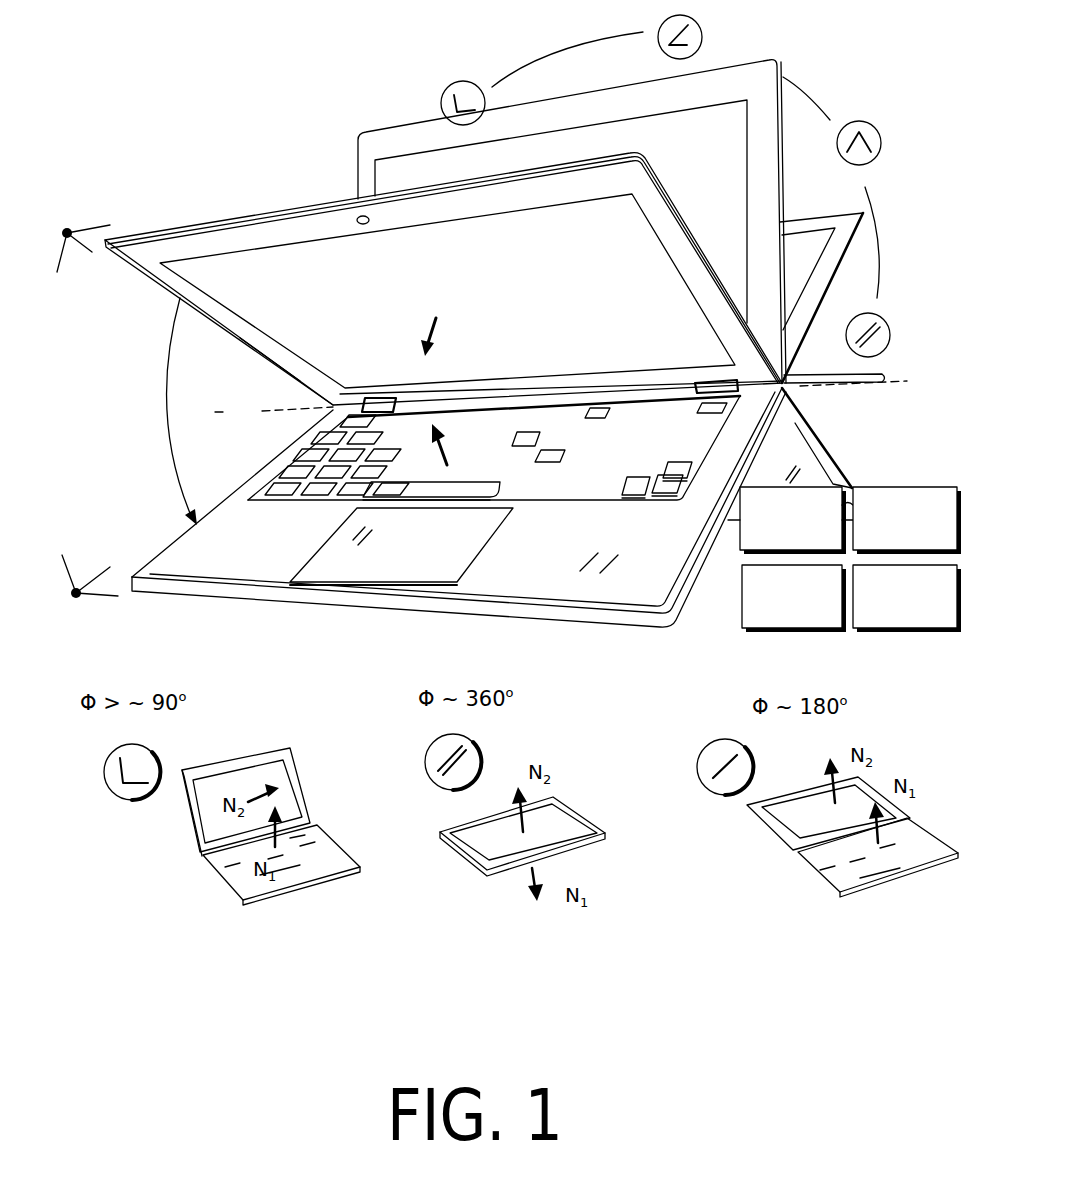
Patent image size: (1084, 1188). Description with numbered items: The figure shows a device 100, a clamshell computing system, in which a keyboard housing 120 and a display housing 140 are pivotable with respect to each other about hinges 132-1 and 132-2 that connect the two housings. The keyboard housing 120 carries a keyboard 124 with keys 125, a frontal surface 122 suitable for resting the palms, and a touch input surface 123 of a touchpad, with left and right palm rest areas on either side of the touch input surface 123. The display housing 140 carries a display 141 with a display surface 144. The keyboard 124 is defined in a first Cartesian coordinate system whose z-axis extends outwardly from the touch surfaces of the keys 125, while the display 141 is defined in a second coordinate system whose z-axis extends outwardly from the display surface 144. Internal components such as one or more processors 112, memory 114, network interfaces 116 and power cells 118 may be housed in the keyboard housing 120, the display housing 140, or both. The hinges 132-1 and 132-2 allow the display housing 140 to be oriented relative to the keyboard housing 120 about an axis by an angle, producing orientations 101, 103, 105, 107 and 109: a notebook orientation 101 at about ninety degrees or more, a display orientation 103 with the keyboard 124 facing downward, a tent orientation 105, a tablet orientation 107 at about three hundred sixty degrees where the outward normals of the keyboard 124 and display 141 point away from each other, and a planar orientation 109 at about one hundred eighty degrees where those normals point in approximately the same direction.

The device 100 is at (278, 110).
The orientation 101 is at (445, 91).
The orientation 103 is at (663, 20).
The orientation 105 is at (872, 128).
The orientation 107 is at (884, 320).
The orientation 109 is at (699, 750).
The processors 112 is at (790, 520).
The memory 114 is at (907, 520).
The network interfaces 116 is at (794, 598).
The power cells 118 is at (907, 598).
The keyboard housing 120 is at (203, 598).
The frontal surface 122 is at (485, 550).
The touch input surface 123 is at (401, 546).
The keyboard 124 is at (651, 483).
The keys 125 is at (632, 483).
The hinge 132-1 is at (386, 398).
The hinge 132-2 is at (703, 382).
The display housing 140 is at (197, 220).
The display 141 is at (279, 366).
The display surface 144 is at (447, 291).